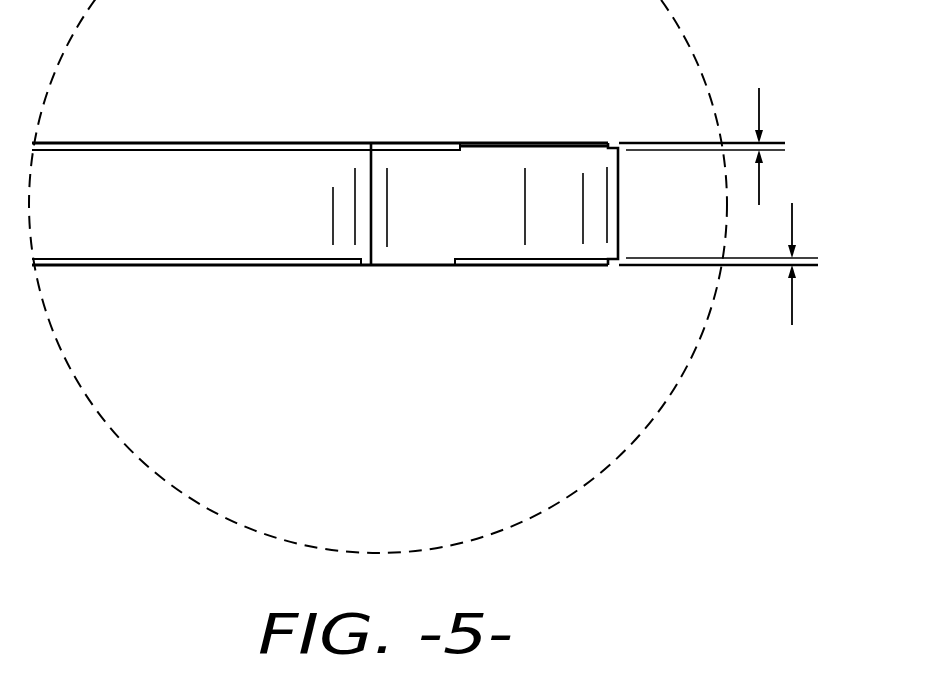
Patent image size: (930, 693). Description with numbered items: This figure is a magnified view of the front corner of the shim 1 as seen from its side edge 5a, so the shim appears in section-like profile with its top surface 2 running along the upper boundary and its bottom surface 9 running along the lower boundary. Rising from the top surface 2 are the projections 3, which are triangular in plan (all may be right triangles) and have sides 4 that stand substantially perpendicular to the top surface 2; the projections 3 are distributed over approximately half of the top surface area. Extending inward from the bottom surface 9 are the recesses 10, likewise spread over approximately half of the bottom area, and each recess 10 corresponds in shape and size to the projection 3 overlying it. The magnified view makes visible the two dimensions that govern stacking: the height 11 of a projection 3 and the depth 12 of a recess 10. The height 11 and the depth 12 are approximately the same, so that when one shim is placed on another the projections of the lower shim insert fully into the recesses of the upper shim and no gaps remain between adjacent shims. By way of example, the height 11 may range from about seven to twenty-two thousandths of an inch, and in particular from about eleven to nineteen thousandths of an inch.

The shim 1 is at (337, 128).
The top surface 2 is at (150, 143).
The edge 5a is at (222, 178).
The bottom surface 9 is at (232, 268).
The sides 4 is at (508, 146).
The projections 3 is at (568, 140).
The recesses 10 is at (578, 268).
The height 11 is at (785, 147).
The depth 12 is at (818, 262).